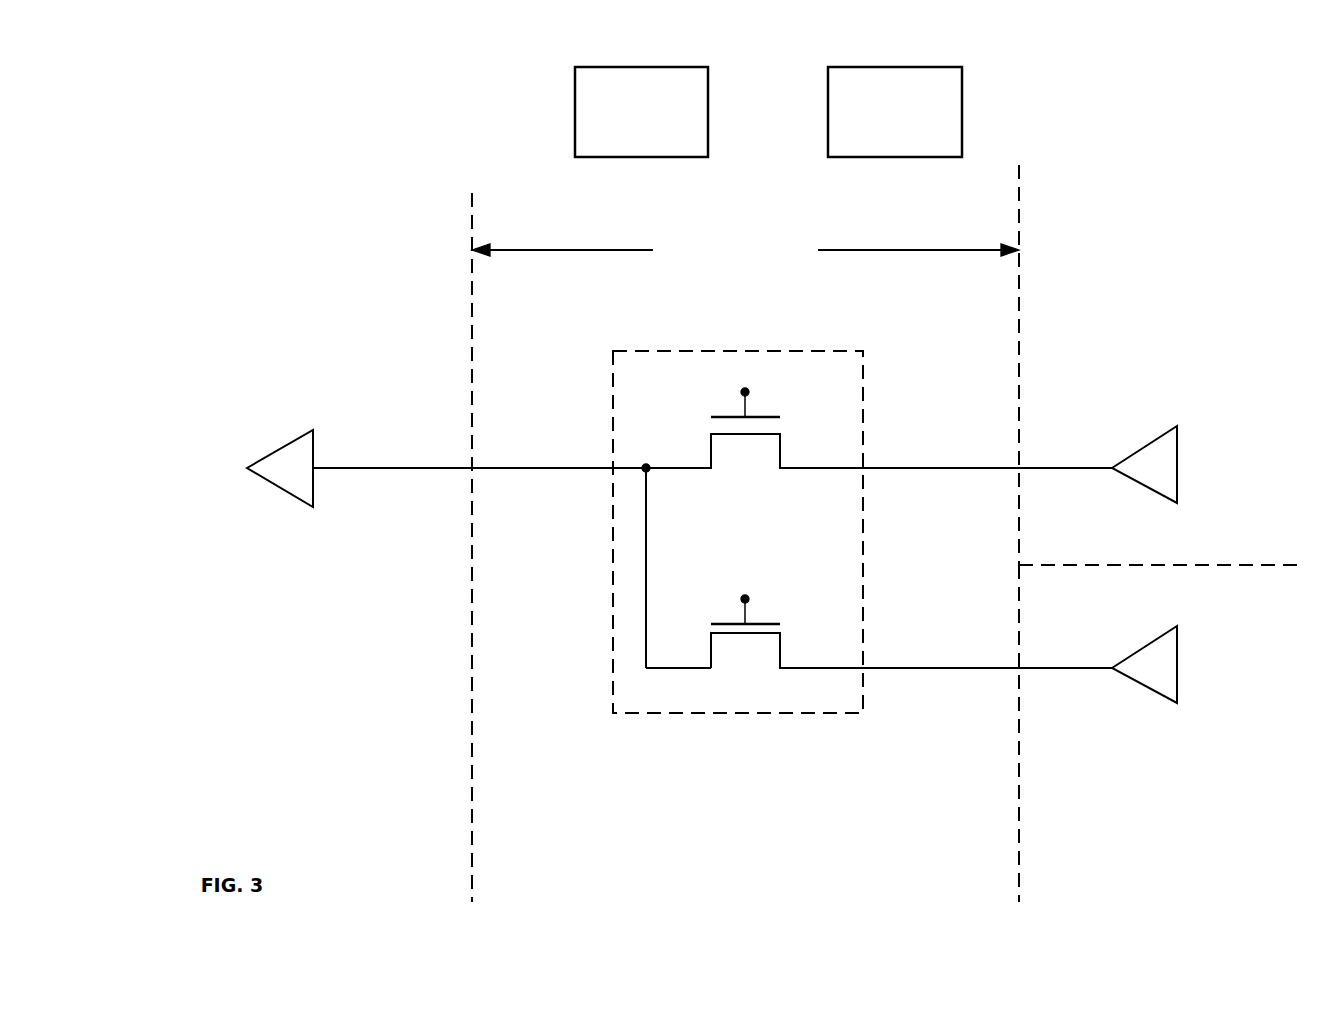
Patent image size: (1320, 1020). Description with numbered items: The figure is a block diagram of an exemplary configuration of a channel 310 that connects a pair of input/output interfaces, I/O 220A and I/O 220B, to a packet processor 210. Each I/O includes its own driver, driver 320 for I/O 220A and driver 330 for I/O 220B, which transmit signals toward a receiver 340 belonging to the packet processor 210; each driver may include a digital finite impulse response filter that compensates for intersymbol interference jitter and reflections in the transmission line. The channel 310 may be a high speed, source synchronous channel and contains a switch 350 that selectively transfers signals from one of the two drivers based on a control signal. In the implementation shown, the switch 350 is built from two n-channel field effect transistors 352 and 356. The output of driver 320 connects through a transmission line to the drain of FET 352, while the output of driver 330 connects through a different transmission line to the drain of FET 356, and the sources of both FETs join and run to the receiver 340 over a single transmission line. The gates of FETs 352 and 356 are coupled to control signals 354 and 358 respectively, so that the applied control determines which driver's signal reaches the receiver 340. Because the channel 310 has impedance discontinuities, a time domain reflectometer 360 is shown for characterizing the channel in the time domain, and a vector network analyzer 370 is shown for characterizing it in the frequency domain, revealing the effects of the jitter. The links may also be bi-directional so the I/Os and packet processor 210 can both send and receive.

The packet processor 210 is at (364, 542).
The I/O 220A is at (1159, 365).
The I/O 220B is at (1090, 733).
The channel 310 is at (745, 251).
The driver 320 is at (1153, 439).
The driver 330 is at (1148, 690).
The receiver 340 is at (289, 441).
The switch 350 is at (738, 588).
The n-channel field effect transistor 352 is at (734, 492).
The control signal 354 is at (745, 391).
The n-channel field effect transistor 356 is at (793, 596).
The control signal 358 is at (745, 597).
The time domain reflectometer 360 is at (962, 108).
The vector network analyzer 370 is at (575, 108).